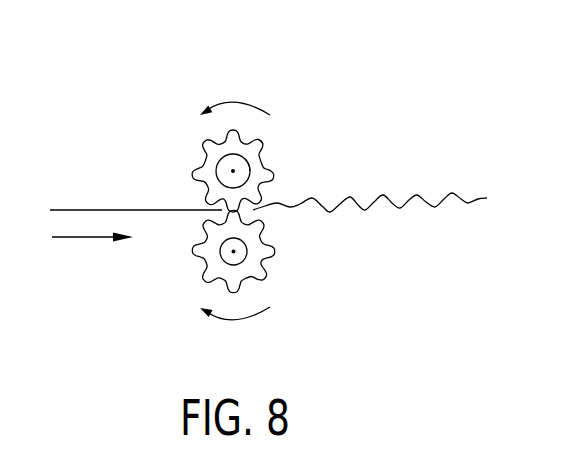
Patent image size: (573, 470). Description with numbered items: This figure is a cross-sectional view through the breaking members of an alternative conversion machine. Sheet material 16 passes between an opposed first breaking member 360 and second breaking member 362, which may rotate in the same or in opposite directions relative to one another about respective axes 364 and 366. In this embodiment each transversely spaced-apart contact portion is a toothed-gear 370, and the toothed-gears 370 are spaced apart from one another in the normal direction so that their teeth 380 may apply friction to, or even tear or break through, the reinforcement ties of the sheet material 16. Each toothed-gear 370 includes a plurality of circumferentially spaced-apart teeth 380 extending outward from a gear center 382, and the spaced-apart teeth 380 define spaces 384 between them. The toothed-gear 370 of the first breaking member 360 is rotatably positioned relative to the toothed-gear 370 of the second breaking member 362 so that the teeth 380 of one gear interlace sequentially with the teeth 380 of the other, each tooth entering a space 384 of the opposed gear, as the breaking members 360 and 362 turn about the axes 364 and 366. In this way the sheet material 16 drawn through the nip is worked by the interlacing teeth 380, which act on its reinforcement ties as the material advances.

The sheet material 16 is at (83, 210).
The first breaking member 360 is at (243, 133).
The second breaking member 362 is at (237, 292).
The axis 364 is at (233, 171).
The axis 366 is at (234, 252).
The toothed-gear 370 is at (303, 126).
The teeth 380 is at (258, 196).
The gear center 382 is at (250, 164).
The spaces 384 is at (256, 144).